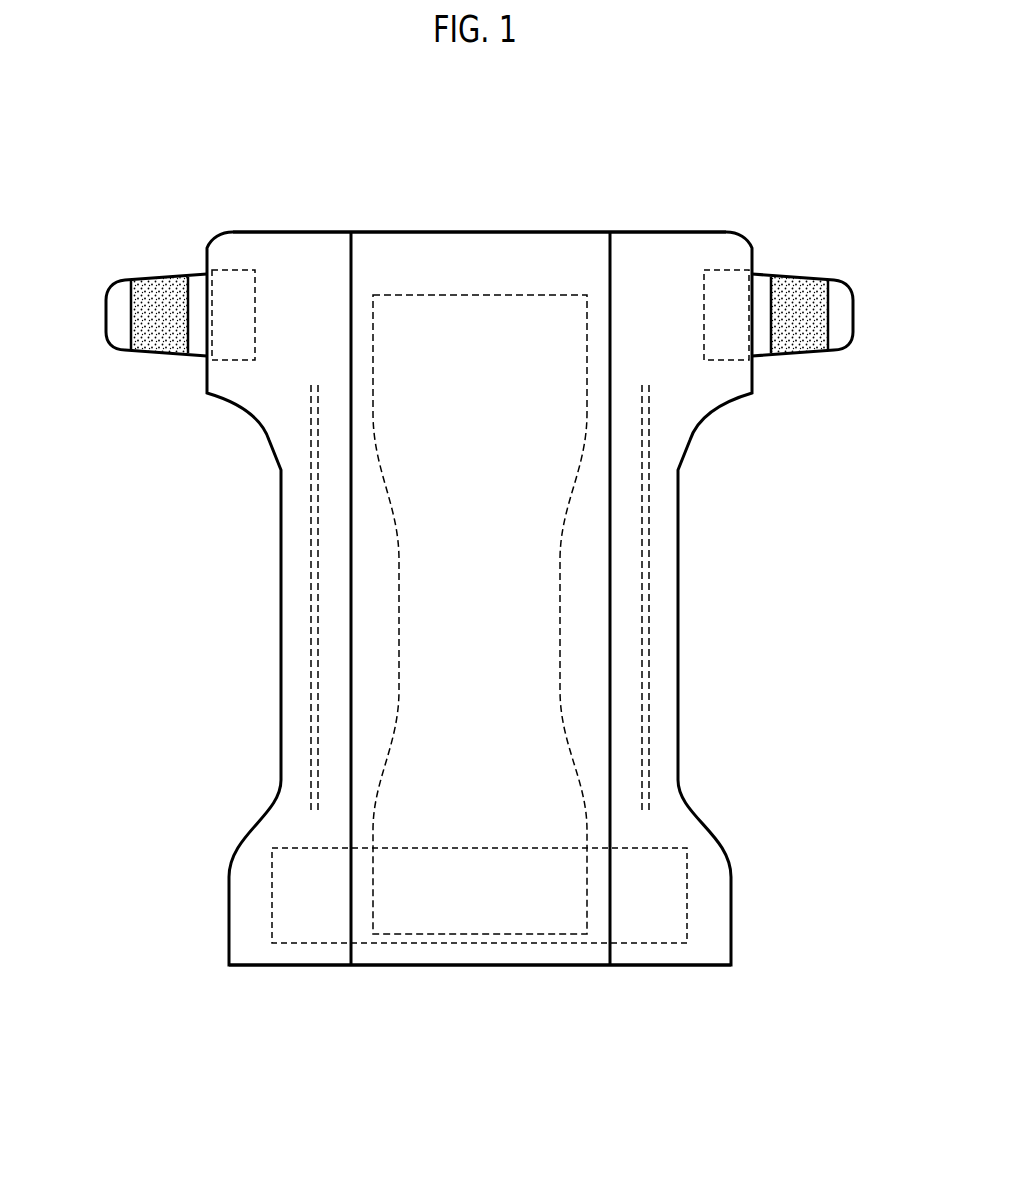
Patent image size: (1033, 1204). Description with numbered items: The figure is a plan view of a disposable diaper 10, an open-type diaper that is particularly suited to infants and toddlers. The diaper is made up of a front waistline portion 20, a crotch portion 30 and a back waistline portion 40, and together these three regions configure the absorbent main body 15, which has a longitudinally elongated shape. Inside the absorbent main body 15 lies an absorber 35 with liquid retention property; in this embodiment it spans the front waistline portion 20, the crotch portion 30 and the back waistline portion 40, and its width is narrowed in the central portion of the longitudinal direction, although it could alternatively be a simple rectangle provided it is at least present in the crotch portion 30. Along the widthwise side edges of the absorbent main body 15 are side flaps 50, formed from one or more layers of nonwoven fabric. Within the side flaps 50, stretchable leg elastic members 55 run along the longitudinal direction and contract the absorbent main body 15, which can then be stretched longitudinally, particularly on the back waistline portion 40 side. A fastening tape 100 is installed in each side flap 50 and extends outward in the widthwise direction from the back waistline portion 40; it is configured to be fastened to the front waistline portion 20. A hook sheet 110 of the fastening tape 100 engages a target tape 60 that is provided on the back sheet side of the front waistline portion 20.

The disposable diaper 10 is at (746, 158).
The absorbent main body 15 is at (385, 228).
The front waistline portion 20 is at (471, 953).
The crotch portion 30 is at (582, 610).
The absorber 35 is at (560, 685).
The back waistline portion 40 is at (478, 247).
The side flap 50 is at (653, 247).
The leg elastic member 55 is at (650, 505).
The target tape 60 is at (661, 945).
The fastening tape 100 is at (121, 360).
The hook sheet 110 is at (800, 280).